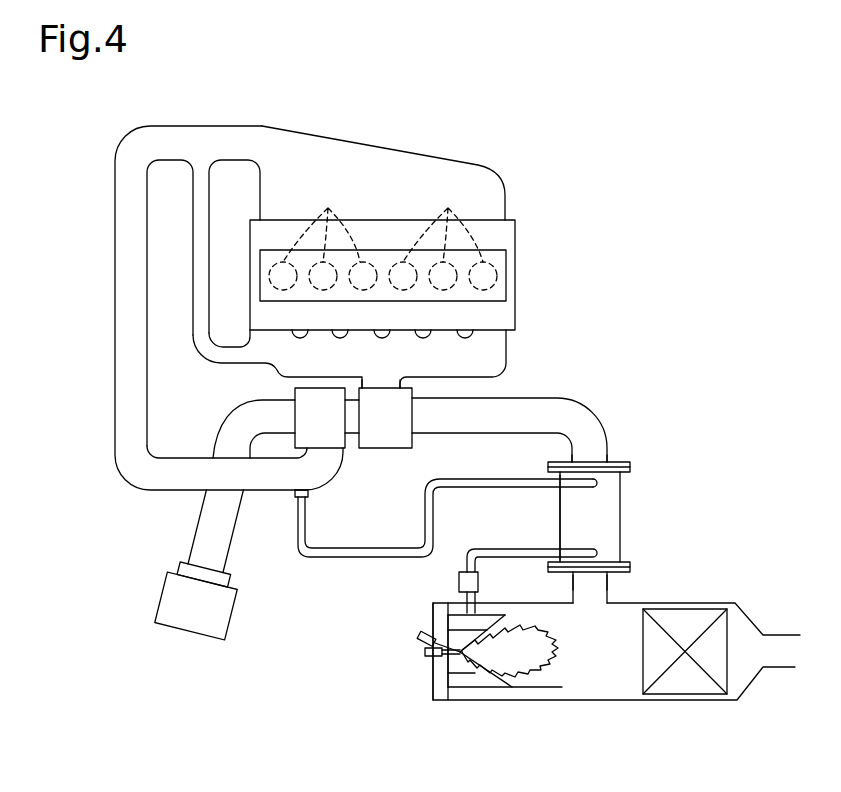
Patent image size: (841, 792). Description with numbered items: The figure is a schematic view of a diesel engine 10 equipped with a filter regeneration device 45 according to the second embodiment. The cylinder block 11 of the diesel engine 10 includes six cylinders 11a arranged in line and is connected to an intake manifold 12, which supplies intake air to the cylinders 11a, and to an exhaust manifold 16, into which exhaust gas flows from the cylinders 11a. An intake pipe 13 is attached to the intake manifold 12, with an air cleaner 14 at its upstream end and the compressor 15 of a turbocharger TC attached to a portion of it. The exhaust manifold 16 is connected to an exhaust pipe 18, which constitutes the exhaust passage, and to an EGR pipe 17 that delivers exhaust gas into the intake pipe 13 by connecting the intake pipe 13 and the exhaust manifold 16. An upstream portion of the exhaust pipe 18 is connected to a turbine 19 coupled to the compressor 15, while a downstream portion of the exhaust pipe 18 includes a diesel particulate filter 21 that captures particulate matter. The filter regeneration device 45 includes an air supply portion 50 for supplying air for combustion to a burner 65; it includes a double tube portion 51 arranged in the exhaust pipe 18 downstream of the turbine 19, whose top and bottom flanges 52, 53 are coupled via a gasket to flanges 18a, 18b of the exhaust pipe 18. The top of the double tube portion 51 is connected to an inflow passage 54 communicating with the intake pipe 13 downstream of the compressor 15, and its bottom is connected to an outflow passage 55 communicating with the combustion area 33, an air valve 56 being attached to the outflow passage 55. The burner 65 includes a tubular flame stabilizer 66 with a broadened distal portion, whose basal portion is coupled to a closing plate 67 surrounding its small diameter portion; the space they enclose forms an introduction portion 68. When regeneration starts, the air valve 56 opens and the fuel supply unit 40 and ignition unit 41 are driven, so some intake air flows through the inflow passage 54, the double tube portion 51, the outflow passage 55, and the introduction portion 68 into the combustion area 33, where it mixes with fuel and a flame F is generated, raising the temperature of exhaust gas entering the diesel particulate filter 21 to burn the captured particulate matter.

The diesel engine 10 is at (650, 230).
The cylinder block 11 is at (506, 222).
The cylinders 11a is at (383, 236).
The intake manifold 12 is at (418, 154).
The intake pipe 13 is at (165, 492).
The air cleaner 14 is at (165, 598).
The compressor 15 is at (295, 396).
The exhaust manifold 16 is at (508, 347).
The EGR pipe 17 is at (208, 170).
The exhaust pipe 18 is at (592, 413).
The flange of the exhaust pipe 18a is at (548, 466).
The flange of the exhaust pipe 18b is at (548, 570).
The turbine 19 is at (367, 383).
The diesel particulate filter 21 is at (720, 606).
The combustion area 33 is at (455, 667).
The fuel supply unit 40 is at (424, 653).
The ignition unit 41 is at (420, 633).
The filter regeneration device 45 is at (590, 718).
The air supply portion 50 is at (622, 522).
The double tube portion 51 is at (560, 510).
The flange 52 is at (630, 467).
The flange 53 is at (632, 566).
The inflow passage 54 is at (305, 560).
The outflow passage 55 is at (480, 549).
The air valve 56 is at (458, 582).
The burner 65 is at (432, 694).
The flame stabilizer 66 is at (508, 684).
The closing plate 67 is at (491, 688).
The introduction portion 68 is at (462, 688).
The flame F is at (556, 642).
The turbocharger TC is at (358, 460).